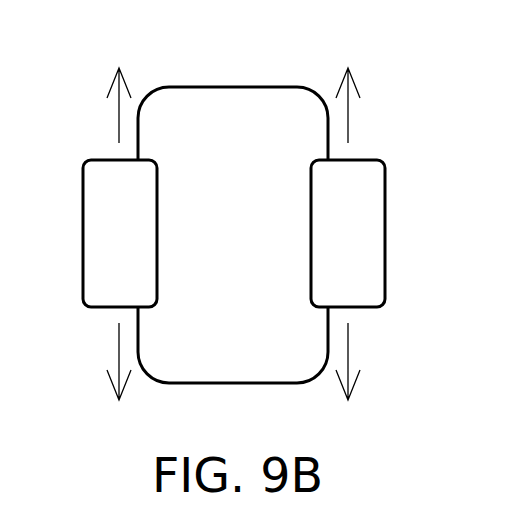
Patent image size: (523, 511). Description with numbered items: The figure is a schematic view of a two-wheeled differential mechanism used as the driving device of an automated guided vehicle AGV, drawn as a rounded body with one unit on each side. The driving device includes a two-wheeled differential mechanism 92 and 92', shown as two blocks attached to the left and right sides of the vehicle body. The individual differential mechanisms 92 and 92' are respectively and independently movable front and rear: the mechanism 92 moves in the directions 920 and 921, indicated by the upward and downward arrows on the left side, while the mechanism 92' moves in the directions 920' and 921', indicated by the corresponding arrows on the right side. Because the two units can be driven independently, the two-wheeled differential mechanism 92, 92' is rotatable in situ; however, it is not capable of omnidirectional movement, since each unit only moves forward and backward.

The automated guided vehicle AGV is at (237, 107).
The differential mechanism 92 is at (89, 233).
The differential mechanism 92' is at (381, 233).
The direction 920 is at (78, 105).
The direction 920' is at (393, 105).
The direction 921 is at (79, 361).
The direction 921' is at (391, 361).